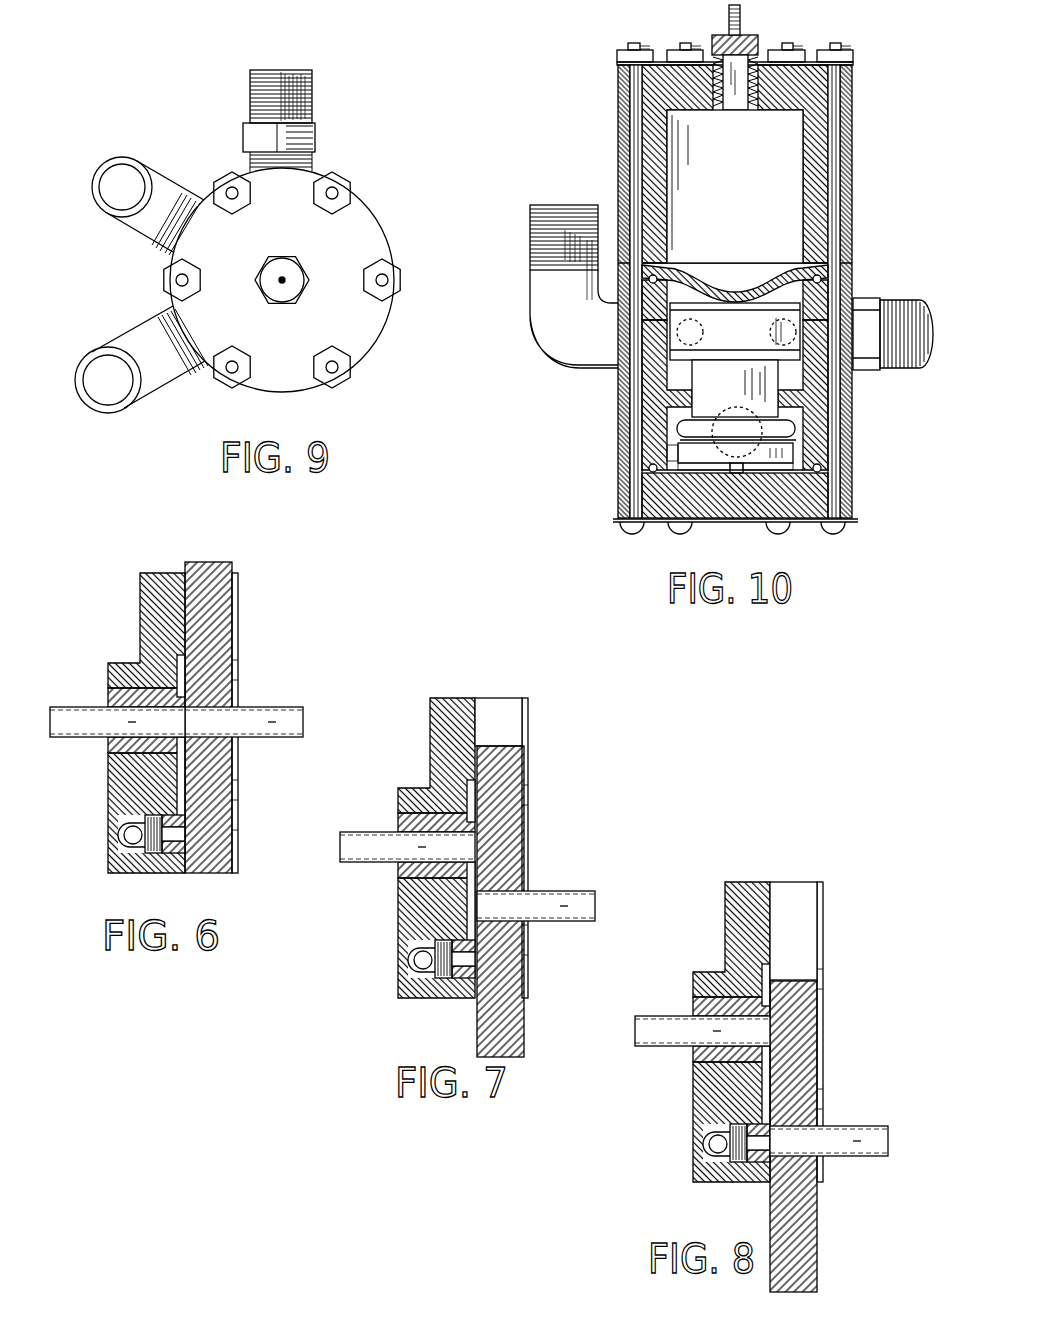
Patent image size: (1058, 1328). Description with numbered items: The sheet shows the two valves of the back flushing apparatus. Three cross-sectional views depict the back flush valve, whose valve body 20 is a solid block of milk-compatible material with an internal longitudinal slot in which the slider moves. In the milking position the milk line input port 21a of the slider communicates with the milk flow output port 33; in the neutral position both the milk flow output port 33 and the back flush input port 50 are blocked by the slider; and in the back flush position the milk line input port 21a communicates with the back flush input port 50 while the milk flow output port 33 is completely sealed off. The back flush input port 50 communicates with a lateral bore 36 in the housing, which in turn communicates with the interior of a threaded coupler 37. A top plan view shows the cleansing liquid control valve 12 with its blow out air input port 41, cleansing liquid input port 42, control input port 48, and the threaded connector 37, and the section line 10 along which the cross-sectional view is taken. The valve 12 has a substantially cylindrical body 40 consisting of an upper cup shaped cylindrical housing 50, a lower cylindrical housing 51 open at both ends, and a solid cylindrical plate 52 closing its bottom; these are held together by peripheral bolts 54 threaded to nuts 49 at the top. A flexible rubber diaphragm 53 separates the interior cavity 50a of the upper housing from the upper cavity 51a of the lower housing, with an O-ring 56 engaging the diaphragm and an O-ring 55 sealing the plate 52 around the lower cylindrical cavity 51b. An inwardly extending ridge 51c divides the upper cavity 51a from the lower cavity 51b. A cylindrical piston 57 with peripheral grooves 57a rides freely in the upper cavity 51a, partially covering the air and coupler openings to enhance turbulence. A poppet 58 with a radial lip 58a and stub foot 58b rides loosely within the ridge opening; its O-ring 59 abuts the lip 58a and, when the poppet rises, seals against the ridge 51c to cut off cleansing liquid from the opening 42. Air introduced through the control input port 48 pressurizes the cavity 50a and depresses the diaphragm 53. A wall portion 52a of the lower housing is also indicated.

In FIG. 9, the section line 10 is at (259, 246).
In FIG. 10, the cleansing liquid control valve 12 is at (729, 280).
In FIG. 6, the back flush valve body 20 is at (140, 617).
In FIG. 7, the back flush valve body 20 is at (430, 762).
In FIG. 8, the back flush valve body 20 is at (725, 940).
In FIG. 6, the milk line input port 21a is at (218, 732).
In FIG. 7, the milk line input port 21a is at (498, 917).
In FIG. 8, the milk line input port 21a is at (783, 1152).
In FIG. 6, the milk flow output port 33 is at (72, 732).
In FIG. 7, the milk flow output port 33 is at (362, 858).
In FIG. 8, the milk flow output port 33 is at (652, 1043).
In FIG. 6, the lateral bore 36 is at (108, 842).
In FIG. 7, the lateral bore 36 is at (398, 967).
In FIG. 8, the lateral bore 36 is at (693, 1150).
In FIG. 9, the threaded coupler 37 is at (312, 100).
In FIG. 10, the threaded coupler 37 is at (897, 369).
In FIG. 10, the valve body 40 is at (628, 146).
In FIG. 9, the blow out air input port 41 is at (137, 328).
In FIG. 10, the blow out air input port 41 is at (560, 367).
In FIG. 9, the cleansing liquid input port 42 is at (155, 175).
In FIG. 10, the cleansing liquid input port 42 is at (723, 457).
In FIG. 9, the control input port 48 is at (285, 278).
In FIG. 10, the control input port 48 is at (742, 32).
In FIG. 9, the nuts 49 is at (398, 280).
In FIG. 10, the nuts 49 is at (645, 50).
In FIG. 9, the upper cup shaped cylindrical housing 50 is at (376, 222).
In FIG. 10, the upper cup shaped cylindrical housing 50 is at (852, 147).
In FIG. 6, the upper cup shaped cylindrical housing 50 is at (178, 852).
In FIG. 7, the upper cup shaped cylindrical housing 50 is at (470, 978).
In FIG. 8, the upper cup shaped cylindrical housing 50 is at (760, 1165).
In FIG. 10, the interior cavity 50a is at (720, 154).
In FIG. 10, the lower cylindrical housing 51 is at (618, 416).
In FIG. 10, the upper cavity 51a is at (688, 295).
In FIG. 10, the lower cylindrical cavity 51b is at (708, 467).
In FIG. 10, the inwardly extending ridge 51c is at (688, 397).
In FIG. 10, the solid cylindrical plate 52 is at (853, 481).
In FIG. 10, the cylinder wall 52a is at (800, 358).
In FIG. 10, the flexible rubber diaphragm 53 is at (670, 290).
In FIG. 10, the bolts 54 is at (633, 173).
In FIG. 10, the O-ring 55 is at (620, 470).
In FIG. 10, the O-ring 56 is at (832, 271).
In FIG. 10, the cylindrical piston 57 is at (775, 300).
In FIG. 10, the peripheral grooves 57a is at (832, 296).
In FIG. 10, the poppet 58 is at (783, 414).
In FIG. 10, the radial lip 58a is at (677, 453).
In FIG. 10, the stub foot 58b is at (743, 474).
In FIG. 10, the O-ring 59 is at (798, 441).